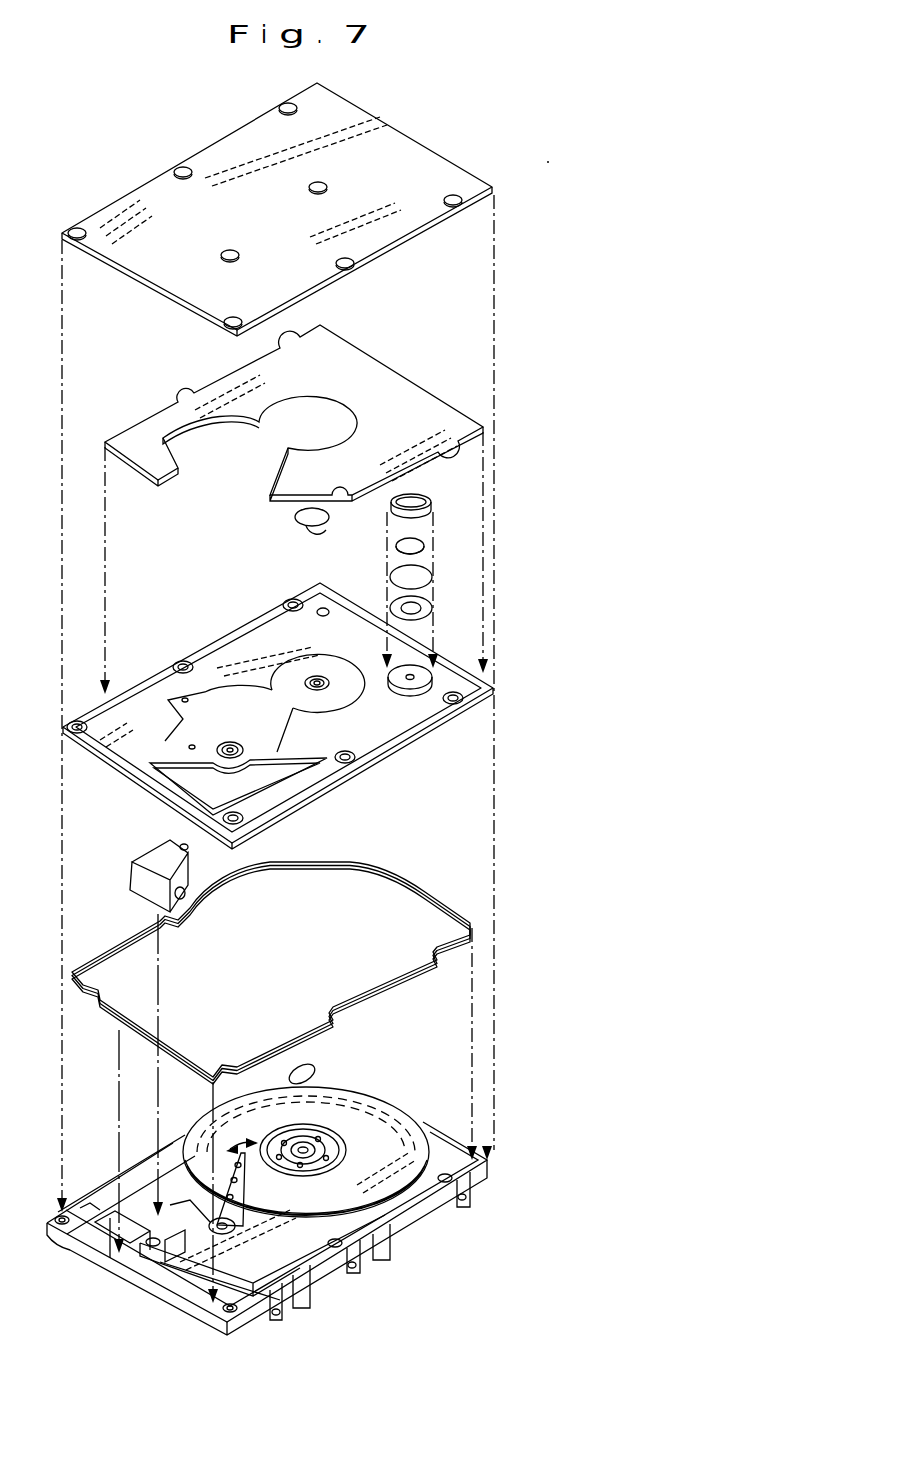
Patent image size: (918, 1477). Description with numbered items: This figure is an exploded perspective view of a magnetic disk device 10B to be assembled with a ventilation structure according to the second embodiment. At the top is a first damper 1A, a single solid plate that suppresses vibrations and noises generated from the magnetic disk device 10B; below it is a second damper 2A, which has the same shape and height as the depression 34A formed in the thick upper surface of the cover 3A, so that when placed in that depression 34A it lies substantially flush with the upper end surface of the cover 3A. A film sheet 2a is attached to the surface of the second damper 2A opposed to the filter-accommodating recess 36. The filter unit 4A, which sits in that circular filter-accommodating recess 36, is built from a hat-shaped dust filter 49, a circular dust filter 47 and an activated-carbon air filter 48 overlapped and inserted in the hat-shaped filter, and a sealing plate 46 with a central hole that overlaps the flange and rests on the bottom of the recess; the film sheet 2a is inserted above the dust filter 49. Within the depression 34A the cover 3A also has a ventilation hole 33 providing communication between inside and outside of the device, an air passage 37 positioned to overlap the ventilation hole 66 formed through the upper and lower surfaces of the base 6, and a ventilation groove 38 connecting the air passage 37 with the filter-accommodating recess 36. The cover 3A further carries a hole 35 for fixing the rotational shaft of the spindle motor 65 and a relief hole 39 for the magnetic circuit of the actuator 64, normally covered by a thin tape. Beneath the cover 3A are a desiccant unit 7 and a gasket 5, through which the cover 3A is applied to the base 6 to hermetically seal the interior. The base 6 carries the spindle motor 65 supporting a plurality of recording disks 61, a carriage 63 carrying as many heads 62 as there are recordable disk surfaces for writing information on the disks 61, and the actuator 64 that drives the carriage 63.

The magnetic disk device 10B is at (574, 278).
The first damper 1A is at (417, 134).
The second damper 2A is at (362, 364).
The film sheet 2a is at (296, 514).
The filter unit 4A is at (373, 549).
The hat-shaped dust filter 49 is at (413, 497).
The air filter 48 is at (420, 542).
The dust filter 47 is at (425, 580).
The sealing plate 46 is at (425, 612).
The cover 3A is at (477, 653).
The depression 34A is at (222, 652).
The air passage 37 is at (317, 598).
The ventilation groove 38 is at (330, 612).
The hole 35 is at (310, 688).
The relief hole 39 is at (250, 802).
The filter-accommodating recess 36 is at (420, 690).
The ventilation hole 33 is at (406, 685).
The desiccant unit 7 is at (152, 855).
The gasket 5 is at (420, 890).
The ventilation hole 66 is at (318, 1074).
The base 6 is at (503, 1162).
The recording disks 61 is at (393, 1155).
The heads 62 is at (245, 1153).
The carriage 63 is at (232, 1216).
The spindle motor 65 is at (306, 1152).
The actuator 64 is at (320, 1275).